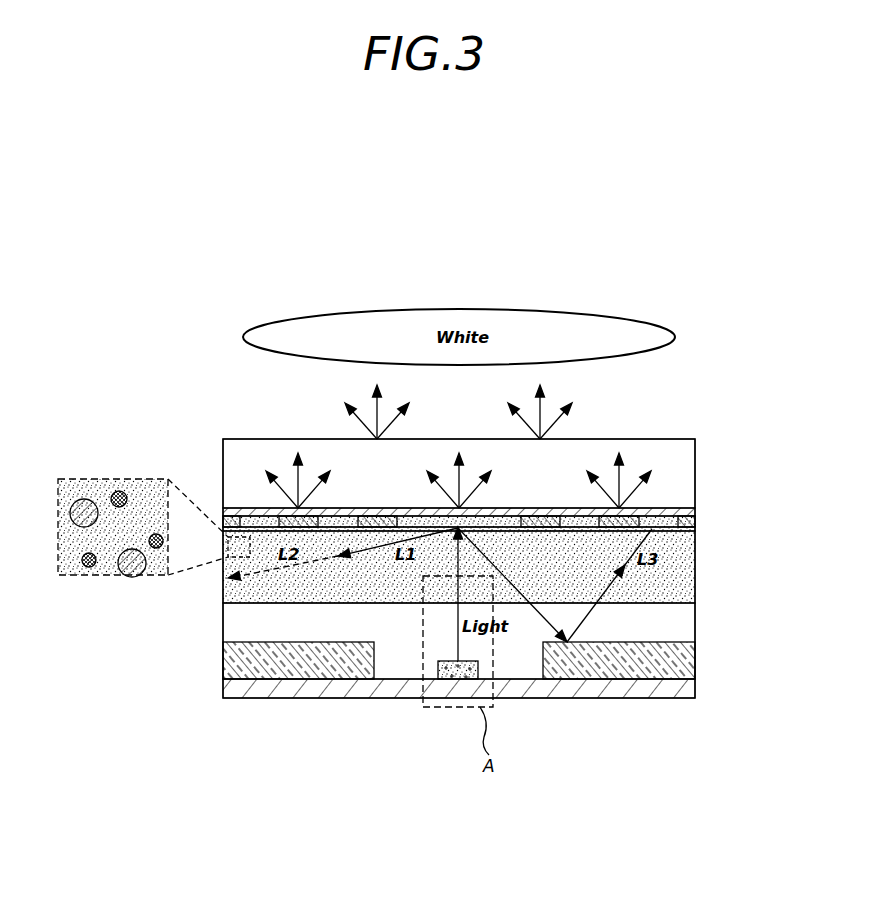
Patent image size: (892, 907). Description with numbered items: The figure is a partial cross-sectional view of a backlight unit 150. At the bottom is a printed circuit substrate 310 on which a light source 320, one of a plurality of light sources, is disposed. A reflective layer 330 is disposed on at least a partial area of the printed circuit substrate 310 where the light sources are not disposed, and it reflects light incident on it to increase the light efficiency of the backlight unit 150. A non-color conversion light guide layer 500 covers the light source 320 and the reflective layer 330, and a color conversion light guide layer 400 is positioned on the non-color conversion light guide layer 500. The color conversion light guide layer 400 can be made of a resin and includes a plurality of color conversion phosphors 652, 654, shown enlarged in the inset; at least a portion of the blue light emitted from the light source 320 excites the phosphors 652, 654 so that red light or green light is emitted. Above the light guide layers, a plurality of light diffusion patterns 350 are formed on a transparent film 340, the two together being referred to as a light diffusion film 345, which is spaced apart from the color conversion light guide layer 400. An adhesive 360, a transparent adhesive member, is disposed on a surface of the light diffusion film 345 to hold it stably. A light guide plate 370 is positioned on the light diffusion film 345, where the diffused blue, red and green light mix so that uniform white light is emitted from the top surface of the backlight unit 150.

The backlight unit 150 is at (258, 274).
The printed circuit substrate 310 is at (696, 691).
The light source 320 is at (461, 682).
The reflective layer 330 is at (696, 658).
The transparent film 340 is at (696, 512).
The light diffusion film 345 is at (518, 534).
The light diffusion pattern 350 is at (696, 529).
The adhesive 360 is at (696, 522).
The light guide plate 370 is at (696, 477).
The color conversion light guide layer 400 is at (696, 579).
The non-color conversion light guide layer 500 is at (696, 619).
The color conversion phosphor 652 is at (81, 499).
The color conversion phosphor 654 is at (119, 491).